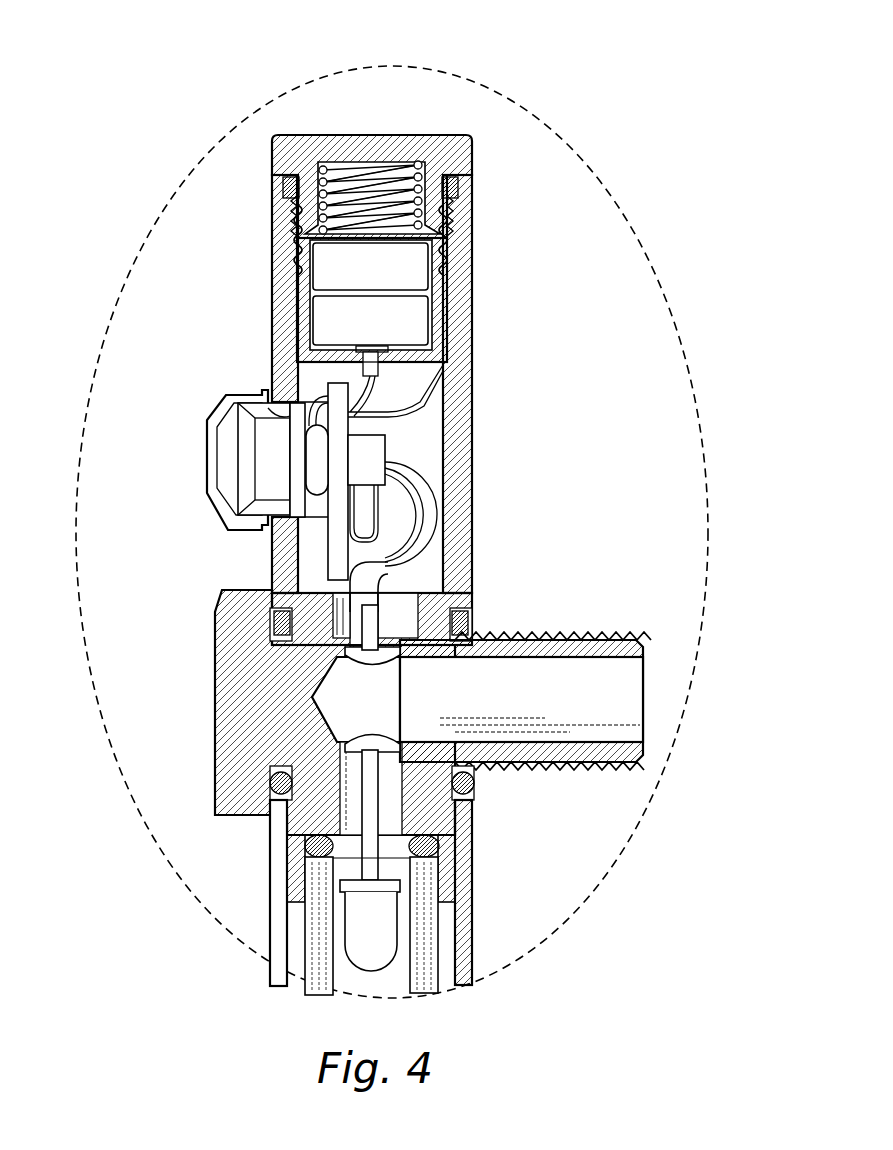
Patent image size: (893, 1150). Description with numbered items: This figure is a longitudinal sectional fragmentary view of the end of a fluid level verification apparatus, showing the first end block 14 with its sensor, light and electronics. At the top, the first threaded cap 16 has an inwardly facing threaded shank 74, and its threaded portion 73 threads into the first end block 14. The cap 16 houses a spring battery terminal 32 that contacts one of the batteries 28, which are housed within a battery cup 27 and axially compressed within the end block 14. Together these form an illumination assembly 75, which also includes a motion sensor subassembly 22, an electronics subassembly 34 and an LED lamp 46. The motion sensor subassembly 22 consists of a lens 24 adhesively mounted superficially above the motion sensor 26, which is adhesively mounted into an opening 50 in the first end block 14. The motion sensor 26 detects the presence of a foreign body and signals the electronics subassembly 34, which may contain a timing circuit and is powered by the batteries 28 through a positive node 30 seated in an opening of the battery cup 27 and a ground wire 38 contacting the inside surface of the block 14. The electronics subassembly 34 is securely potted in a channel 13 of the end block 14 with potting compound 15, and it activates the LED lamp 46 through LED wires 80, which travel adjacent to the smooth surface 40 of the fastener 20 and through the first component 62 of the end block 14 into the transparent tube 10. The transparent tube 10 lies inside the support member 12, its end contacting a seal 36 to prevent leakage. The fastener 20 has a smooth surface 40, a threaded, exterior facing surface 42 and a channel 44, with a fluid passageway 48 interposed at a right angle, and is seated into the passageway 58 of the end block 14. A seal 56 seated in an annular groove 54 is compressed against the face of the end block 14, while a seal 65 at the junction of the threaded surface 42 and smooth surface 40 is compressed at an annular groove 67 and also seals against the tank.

The transparent tube 10 is at (430, 972).
The support member 12 is at (472, 930).
The channel 13 is at (423, 398).
The first end block 14 is at (462, 490).
The potting compound 15 is at (410, 426).
The first threaded cap 16 is at (370, 133).
The fastener 20 is at (215, 677).
The motion sensor subassembly 22 is at (205, 488).
The lens 24 is at (205, 470).
The motion sensor 26 is at (265, 450).
The battery cup 27 is at (440, 300).
The batteries 28 is at (335, 268).
The positive node 30 is at (355, 375).
The spring battery terminal 32 is at (345, 172).
The electronics subassembly 34 is at (381, 447).
The seal 36 is at (360, 805).
The ground wire 38 is at (440, 345).
The smooth surface 40 is at (428, 636).
The threaded, exterior facing surface 42 is at (620, 768).
The channel 44 is at (622, 690).
The LED lamp 46 is at (368, 952).
The fluid passageway 48 is at (385, 743).
The opening 50 is at (298, 412).
The annular groove 54 is at (278, 788).
The seal 56 is at (290, 768).
The passageway 58 is at (310, 746).
The first component 62 is at (305, 836).
The seal 65 is at (474, 774).
The annular groove 67 is at (473, 793).
The threaded portion 73 is at (455, 220).
The threaded shank 74 is at (303, 203).
The illumination assembly 75 is at (248, 546).
The LED wires 80 is at (372, 590).